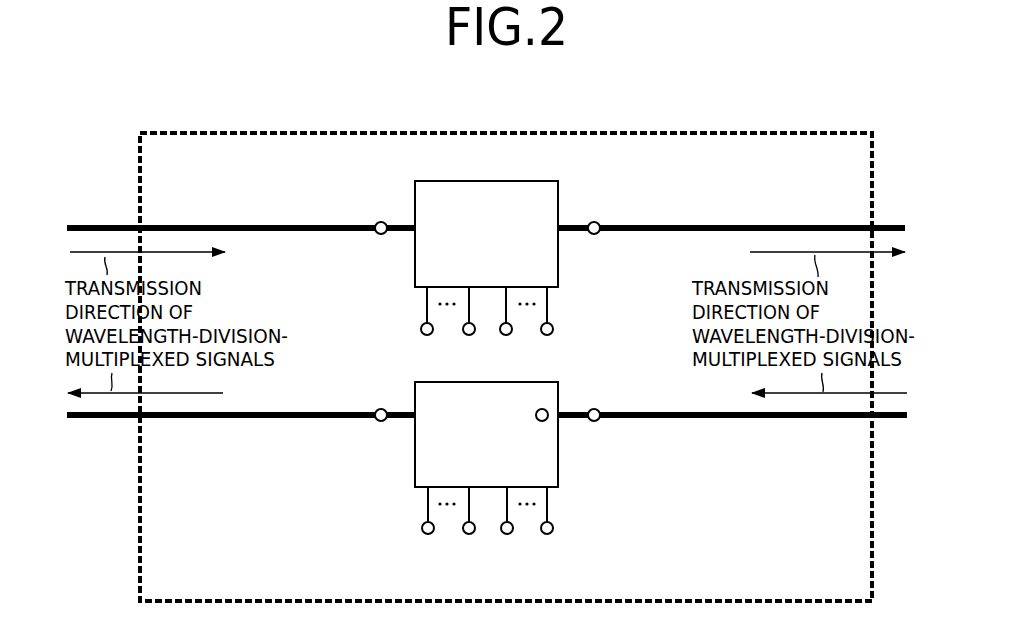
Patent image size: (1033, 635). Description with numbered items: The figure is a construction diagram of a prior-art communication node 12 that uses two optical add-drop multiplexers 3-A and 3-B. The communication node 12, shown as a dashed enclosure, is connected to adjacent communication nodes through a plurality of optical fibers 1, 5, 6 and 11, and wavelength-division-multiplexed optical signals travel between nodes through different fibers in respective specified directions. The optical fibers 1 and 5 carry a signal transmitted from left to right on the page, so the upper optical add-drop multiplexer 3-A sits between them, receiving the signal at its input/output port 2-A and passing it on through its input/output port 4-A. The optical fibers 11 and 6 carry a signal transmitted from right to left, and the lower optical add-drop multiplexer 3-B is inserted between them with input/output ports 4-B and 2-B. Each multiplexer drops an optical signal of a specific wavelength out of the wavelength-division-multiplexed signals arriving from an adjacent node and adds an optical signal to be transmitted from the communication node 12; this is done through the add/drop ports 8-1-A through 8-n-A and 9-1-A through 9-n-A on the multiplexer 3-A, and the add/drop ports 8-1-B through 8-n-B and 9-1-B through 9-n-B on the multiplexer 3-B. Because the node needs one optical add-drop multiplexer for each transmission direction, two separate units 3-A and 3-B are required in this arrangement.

The optical fiber 1 is at (256, 225).
The optical fiber 5 is at (745, 225).
The optical fiber 6 is at (256, 420).
The optical fiber 11 is at (737, 420).
The communication node 12 is at (738, 132).
The optical add-drop multiplexer 3-A is at (515, 180).
The optical add-drop multiplexer 3-B is at (560, 468).
The input/output port 2-A is at (381, 234).
The input/output port 2-B is at (381, 421).
The input/output port 4-A is at (596, 234).
The input/output port 4-B is at (597, 421).
The add/drop port 8-1-A is at (420, 330).
The add/drop port 8-n-A is at (469, 336).
The add/drop port 9-1-A is at (511, 335).
The add/drop port 9-n-A is at (554, 329).
The add/drop port 8-1-B is at (421, 530).
The add/drop port 8-n-B is at (469, 535).
The add/drop port 9-1-B is at (512, 534).
The add/drop port 9-n-B is at (554, 529).